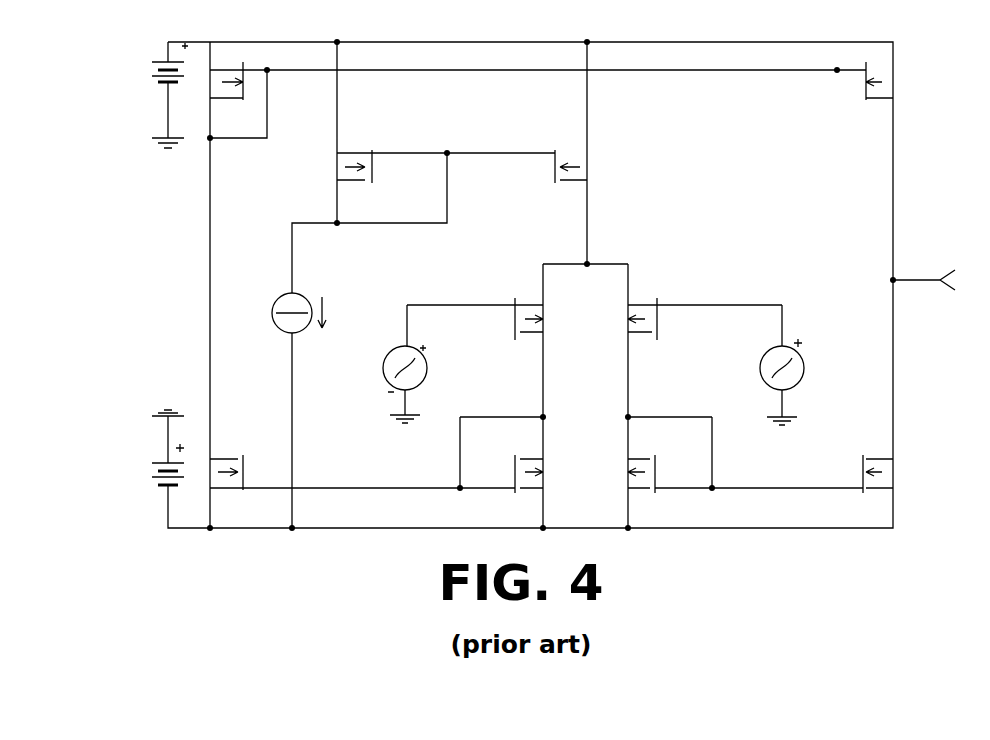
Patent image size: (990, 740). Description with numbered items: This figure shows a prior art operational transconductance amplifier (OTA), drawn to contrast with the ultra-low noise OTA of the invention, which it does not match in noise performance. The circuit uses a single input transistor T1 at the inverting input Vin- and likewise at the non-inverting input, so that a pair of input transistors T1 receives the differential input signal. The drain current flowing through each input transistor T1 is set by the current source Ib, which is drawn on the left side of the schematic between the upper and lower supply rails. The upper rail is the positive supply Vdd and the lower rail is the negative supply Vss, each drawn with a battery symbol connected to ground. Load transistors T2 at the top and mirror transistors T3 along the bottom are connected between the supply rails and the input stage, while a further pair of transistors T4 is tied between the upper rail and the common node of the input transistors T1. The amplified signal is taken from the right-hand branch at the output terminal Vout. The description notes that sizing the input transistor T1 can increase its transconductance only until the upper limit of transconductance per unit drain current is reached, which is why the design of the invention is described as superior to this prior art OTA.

The input transistor T1 is at (594, 306).
The PMOS load transistor T2 is at (551, 99).
The NMOS current mirror transistor T3 is at (551, 461).
The PMOS current mirror transistor T4 is at (462, 184).
The current source Ib is at (284, 313).
The inverting input Vin- is at (426, 364).
The output terminal Vout is at (925, 267).
The positive supply voltage Vdd is at (144, 105).
The negative supply voltage Vss is at (144, 449).